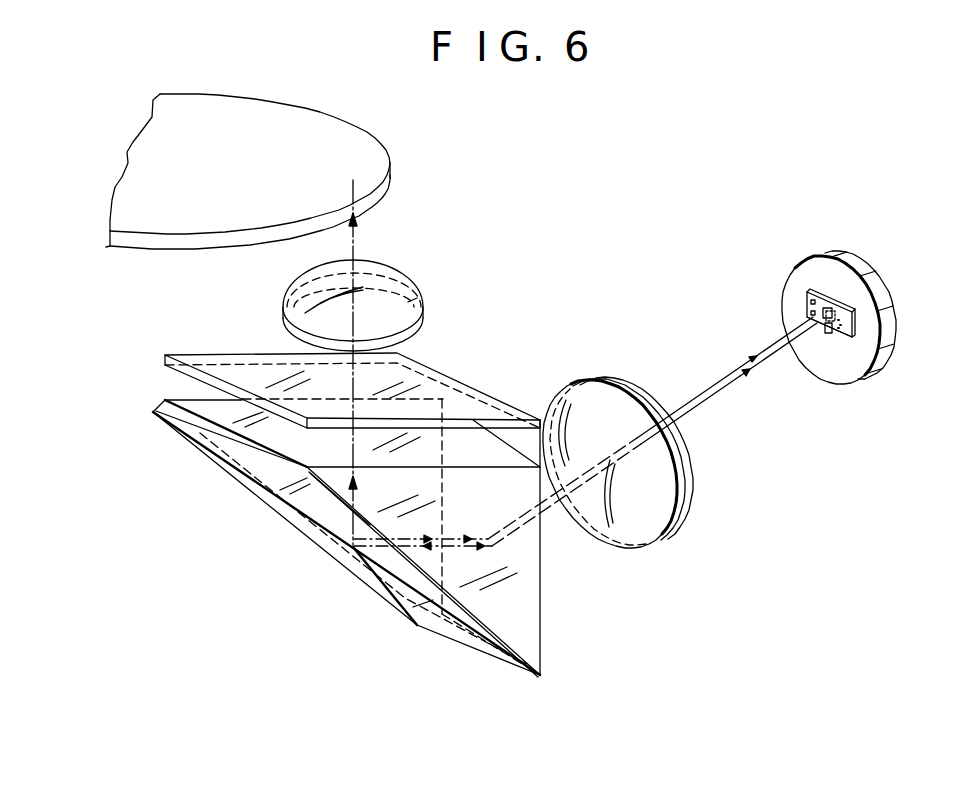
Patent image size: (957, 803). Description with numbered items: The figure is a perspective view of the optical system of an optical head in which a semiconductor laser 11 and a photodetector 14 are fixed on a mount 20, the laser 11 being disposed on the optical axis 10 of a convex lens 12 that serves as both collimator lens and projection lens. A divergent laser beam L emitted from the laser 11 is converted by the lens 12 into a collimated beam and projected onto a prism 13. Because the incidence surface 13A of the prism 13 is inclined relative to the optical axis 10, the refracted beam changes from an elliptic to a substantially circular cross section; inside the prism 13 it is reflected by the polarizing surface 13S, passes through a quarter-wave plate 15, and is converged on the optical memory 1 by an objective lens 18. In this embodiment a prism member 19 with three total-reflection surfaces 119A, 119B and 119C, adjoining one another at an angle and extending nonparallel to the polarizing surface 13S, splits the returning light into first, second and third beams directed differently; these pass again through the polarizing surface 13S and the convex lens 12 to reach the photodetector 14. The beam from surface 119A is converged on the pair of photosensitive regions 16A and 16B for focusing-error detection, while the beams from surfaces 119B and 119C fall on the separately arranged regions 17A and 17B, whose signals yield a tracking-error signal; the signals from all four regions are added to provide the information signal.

The optical memory 1 is at (370, 151).
The objective lens 18 is at (421, 299).
The quarter-wave plate 15 is at (228, 356).
The prism 13 is at (420, 522).
The incidence surface 13A is at (508, 445).
The polarizing surface 13S is at (183, 412).
The prism member 19 is at (321, 529).
The total-reflection surface 119A is at (283, 515).
The total-reflection surface 119B is at (430, 613).
The total-reflection surface 119C is at (333, 517).
The convex lens 12 is at (655, 540).
The optical axis 10 is at (725, 393).
The laser beam L is at (778, 362).
The mount 20 is at (823, 260).
The photodetector 14 is at (860, 321).
The semiconductor laser 11 is at (827, 338).
The photosensitive region 16A is at (803, 280).
The photosensitive region 16B is at (836, 307).
The photosensitive region 17A is at (810, 304).
The photosensitive region 17B is at (813, 315).